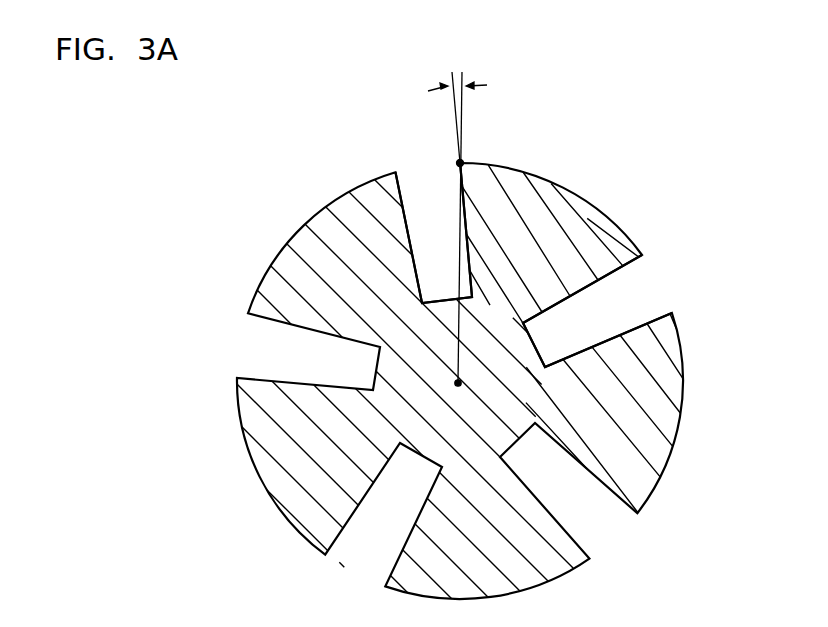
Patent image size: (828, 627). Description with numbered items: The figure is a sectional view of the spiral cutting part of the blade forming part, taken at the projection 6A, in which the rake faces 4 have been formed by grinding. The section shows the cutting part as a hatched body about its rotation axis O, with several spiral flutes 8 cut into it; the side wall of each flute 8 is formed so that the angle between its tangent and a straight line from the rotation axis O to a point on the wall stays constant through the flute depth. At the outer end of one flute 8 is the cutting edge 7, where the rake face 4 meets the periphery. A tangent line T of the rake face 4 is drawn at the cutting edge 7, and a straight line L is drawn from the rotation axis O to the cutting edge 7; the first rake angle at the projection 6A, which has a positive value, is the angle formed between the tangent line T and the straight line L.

The projection 6A is at (682, 375).
The spiral flute 8 is at (595, 283).
The rake face 4 is at (467, 235).
The cutting edge 7 is at (463, 158).
The straight line L is at (463, 112).
The tangent line T is at (452, 112).
The rotation axis O is at (457, 399).